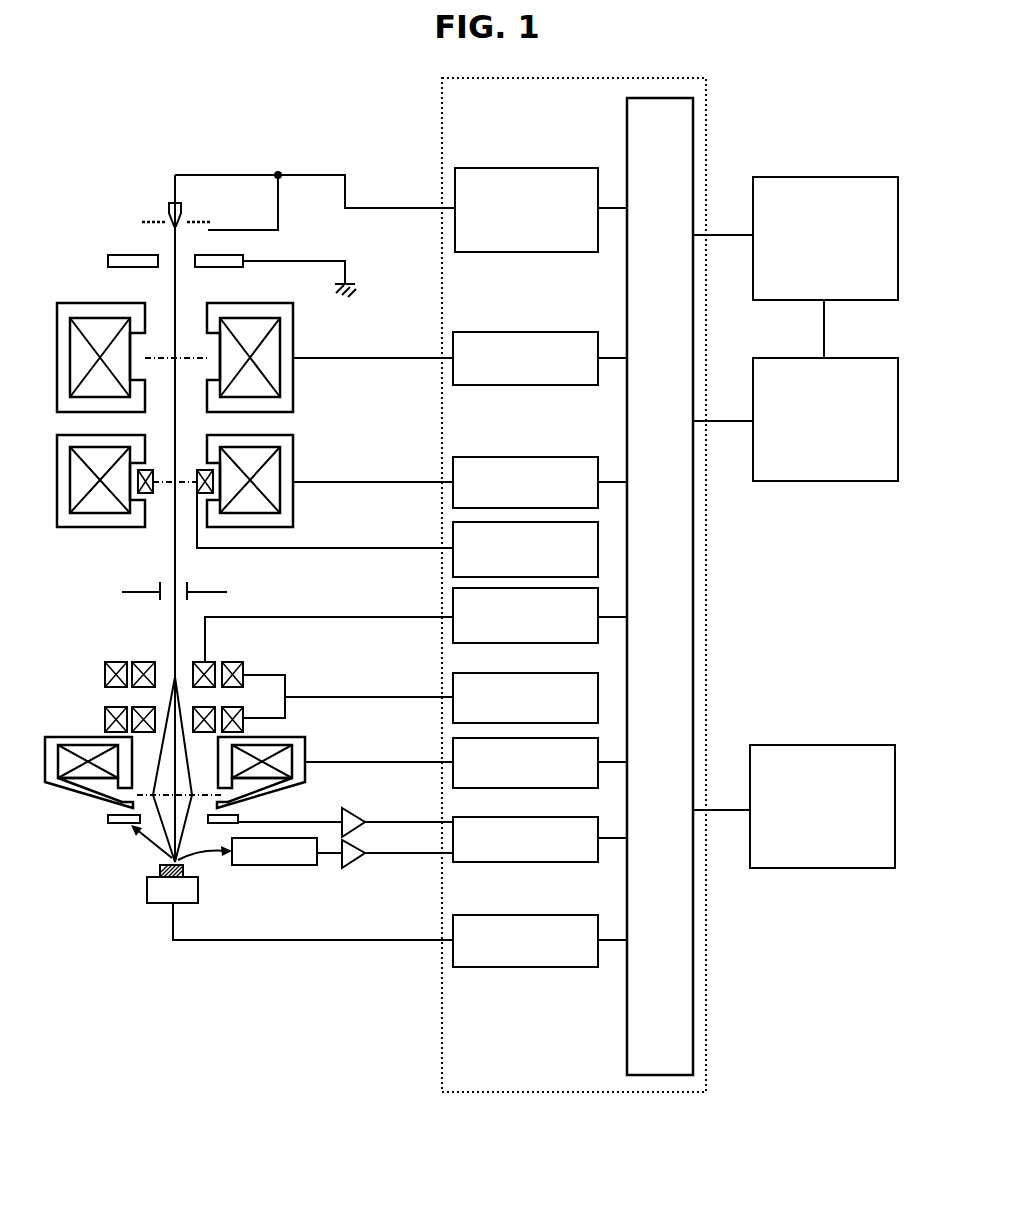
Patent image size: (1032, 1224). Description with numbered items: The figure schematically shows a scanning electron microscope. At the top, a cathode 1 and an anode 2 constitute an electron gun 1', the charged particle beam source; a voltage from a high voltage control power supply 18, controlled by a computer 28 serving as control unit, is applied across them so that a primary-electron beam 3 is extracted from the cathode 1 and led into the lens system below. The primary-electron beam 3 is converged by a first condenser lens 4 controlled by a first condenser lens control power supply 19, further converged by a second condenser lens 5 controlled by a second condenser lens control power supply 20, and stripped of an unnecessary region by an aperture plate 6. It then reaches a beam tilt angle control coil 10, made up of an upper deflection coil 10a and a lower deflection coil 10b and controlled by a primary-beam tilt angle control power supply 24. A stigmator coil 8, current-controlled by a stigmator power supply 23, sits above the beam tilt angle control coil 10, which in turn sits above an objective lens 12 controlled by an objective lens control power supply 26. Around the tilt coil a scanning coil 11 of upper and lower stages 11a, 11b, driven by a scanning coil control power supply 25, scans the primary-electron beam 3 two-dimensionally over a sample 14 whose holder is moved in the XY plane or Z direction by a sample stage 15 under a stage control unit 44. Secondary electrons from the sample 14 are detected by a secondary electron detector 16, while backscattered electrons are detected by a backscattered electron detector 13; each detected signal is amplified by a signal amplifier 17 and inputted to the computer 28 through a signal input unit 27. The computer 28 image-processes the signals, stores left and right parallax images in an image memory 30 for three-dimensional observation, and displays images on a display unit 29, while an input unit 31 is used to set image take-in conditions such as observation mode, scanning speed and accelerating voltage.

The cathode 1 is at (278, 200).
The electron gun 1' is at (211, 193).
The anode 2 is at (108, 259).
The primary-electron beam 3 is at (177, 282).
The first condenser lens 4 is at (283, 330).
The second condenser lens 5 is at (283, 455).
The aperture plate 6 is at (140, 589).
The stigmator coil 8 is at (149, 495).
The beam tilt angle control coil 10 is at (101, 665).
The upper deflection coil 10a is at (141, 662).
The lower deflection coil 10b is at (145, 707).
The scanning coil 11 is at (323, 677).
The upper scanning coil stage 11a is at (245, 670).
The lower scanning coil stage 11b is at (243, 722).
The objective lens 12 is at (80, 745).
The backscattered electron detector 13 is at (108, 820).
The sample 14 is at (158, 868).
The sample stage 15 is at (147, 890).
The secondary electron detector 16 is at (278, 868).
The signal amplifier 17 is at (352, 858).
The high voltage control power supply 18 is at (453, 176).
The first condenser lens control power supply 19 is at (453, 337).
The second condenser lens control power supply 20 is at (453, 455).
The stigmator power supply 23 is at (453, 525).
The primary-beam tilt angle control power supply 24 is at (453, 593).
The scanning coil control power supply 25 is at (453, 676).
The objective lens control power supply 26 is at (453, 742).
The signal input unit 27 is at (527, 865).
The computer 28 is at (694, 100).
The display unit 29 is at (827, 176).
The image memory 30 is at (827, 482).
The input unit 31 is at (823, 744).
The stage control unit 44 is at (525, 970).